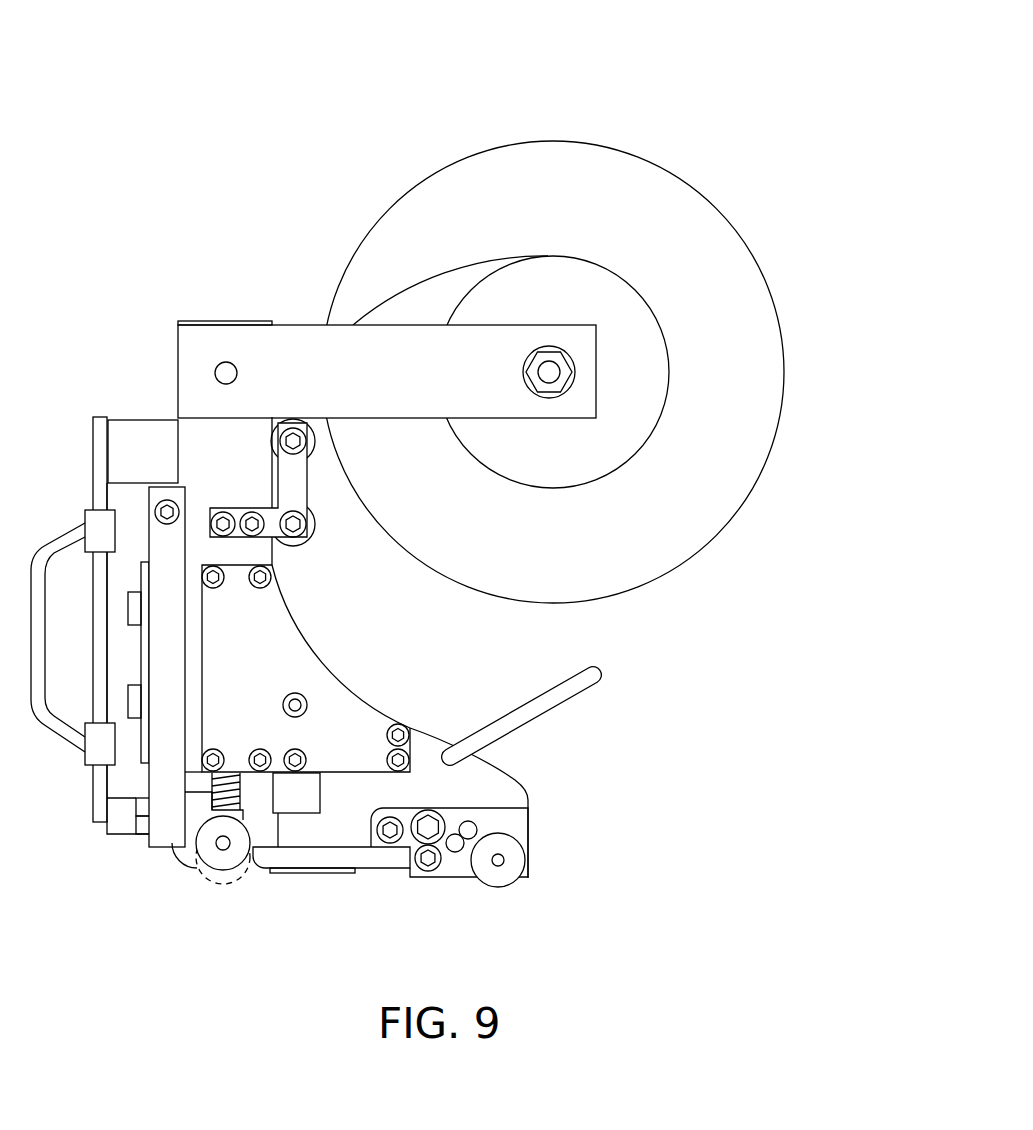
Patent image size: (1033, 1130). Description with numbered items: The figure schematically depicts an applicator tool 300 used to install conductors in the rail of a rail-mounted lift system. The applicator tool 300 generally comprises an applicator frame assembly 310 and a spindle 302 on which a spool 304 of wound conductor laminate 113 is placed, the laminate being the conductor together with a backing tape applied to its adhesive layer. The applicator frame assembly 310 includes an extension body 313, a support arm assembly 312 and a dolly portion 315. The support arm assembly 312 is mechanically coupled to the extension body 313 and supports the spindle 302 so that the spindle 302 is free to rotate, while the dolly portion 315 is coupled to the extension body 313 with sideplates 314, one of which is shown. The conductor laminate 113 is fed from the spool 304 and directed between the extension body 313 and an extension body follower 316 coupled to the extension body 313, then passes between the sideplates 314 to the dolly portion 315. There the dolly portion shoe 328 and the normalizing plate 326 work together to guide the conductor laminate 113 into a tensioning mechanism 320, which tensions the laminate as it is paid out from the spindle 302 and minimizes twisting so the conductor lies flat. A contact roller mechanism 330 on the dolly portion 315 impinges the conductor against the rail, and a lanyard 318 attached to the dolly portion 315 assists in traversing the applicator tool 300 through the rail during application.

The applicator tool 300 is at (658, 125).
The conductor laminate 113 is at (448, 270).
The spindle 302 is at (655, 317).
The spool 304 is at (787, 379).
The support arm assembly 312 is at (290, 325).
The extension body 313 is at (205, 444).
The extension body follower 316 is at (316, 533).
The applicator frame assembly 310 is at (311, 594).
The sideplate 314 is at (410, 720).
The lanyard 318 is at (597, 688).
The dolly portion 315 is at (503, 766).
The contact roller mechanism 330 is at (187, 871).
The normalizing plate 326 is at (298, 873).
The dolly portion shoe 328 is at (378, 870).
The tensioning mechanism 320 is at (457, 876).